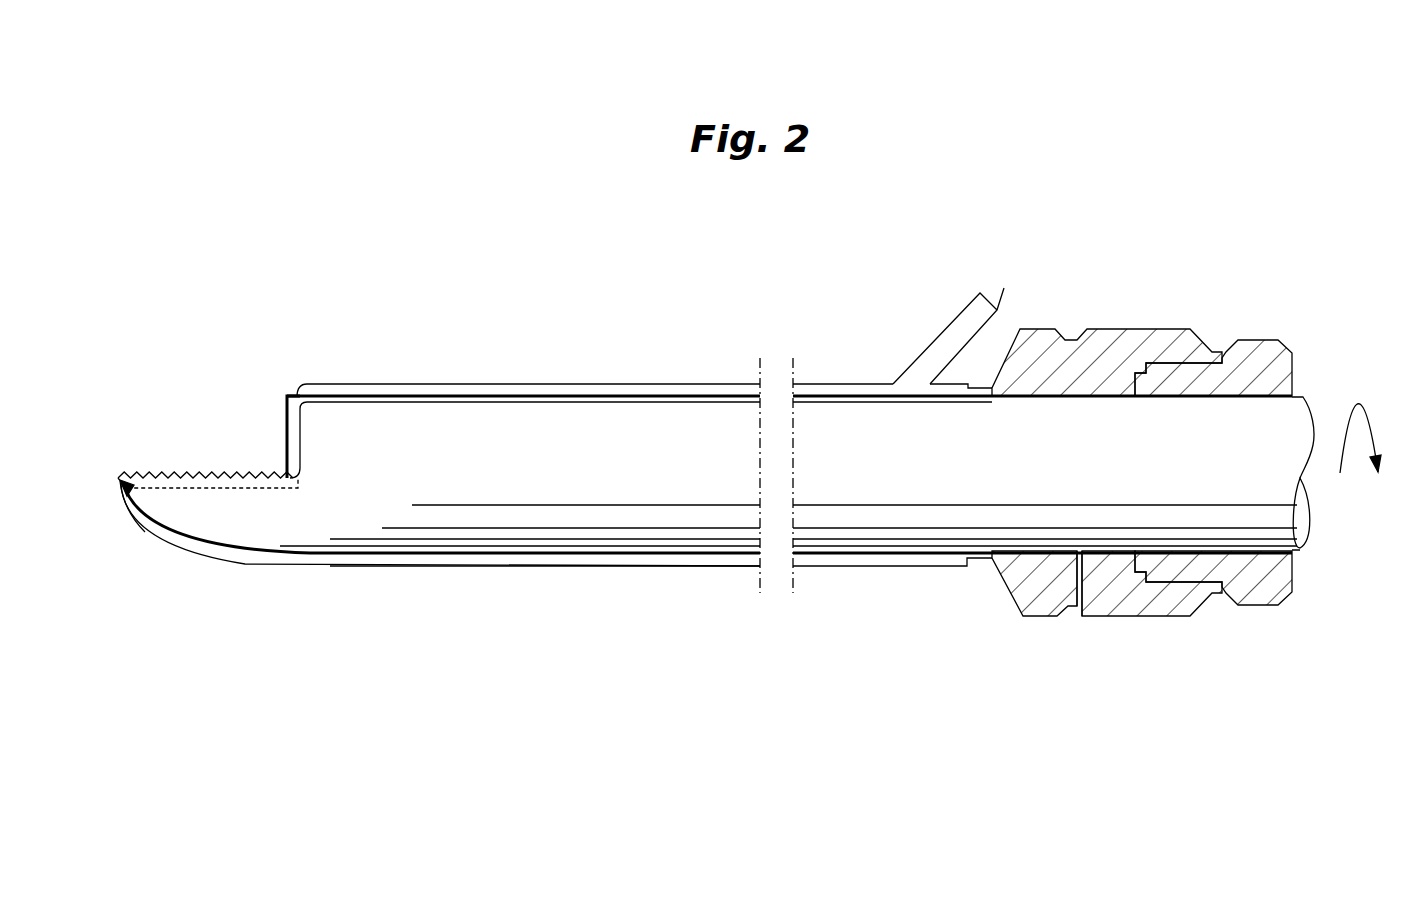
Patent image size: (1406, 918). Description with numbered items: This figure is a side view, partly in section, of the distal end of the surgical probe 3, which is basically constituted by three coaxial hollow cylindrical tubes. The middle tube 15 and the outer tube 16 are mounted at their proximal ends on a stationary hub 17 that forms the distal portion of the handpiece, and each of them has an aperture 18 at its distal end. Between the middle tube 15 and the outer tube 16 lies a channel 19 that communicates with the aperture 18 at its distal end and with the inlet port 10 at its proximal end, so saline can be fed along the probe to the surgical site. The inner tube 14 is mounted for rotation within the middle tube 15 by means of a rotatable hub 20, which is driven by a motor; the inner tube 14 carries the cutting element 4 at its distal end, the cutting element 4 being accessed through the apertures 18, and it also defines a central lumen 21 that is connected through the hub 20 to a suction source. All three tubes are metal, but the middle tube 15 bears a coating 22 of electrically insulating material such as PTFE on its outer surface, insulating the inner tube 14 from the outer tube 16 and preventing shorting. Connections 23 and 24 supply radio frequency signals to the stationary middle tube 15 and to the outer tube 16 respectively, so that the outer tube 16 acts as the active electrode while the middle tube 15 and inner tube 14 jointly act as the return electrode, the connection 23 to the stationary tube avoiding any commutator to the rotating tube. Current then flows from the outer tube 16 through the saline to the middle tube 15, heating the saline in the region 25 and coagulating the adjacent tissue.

The surgical probe 3 is at (400, 383).
The cutting element 4 is at (190, 470).
The inlet port 10 is at (950, 340).
The inner tube 14 is at (150, 518).
The middle tube 15 is at (578, 393).
The outer tube 16 is at (497, 383).
The stationary hub 17 is at (1142, 327).
The aperture 18 is at (280, 423).
The channel 19 is at (665, 388).
The rotatable hub 20 is at (1255, 355).
The central lumen 21 is at (378, 537).
The coating 22 is at (583, 558).
The connection 23 is at (1080, 612).
The connection 24 is at (858, 568).
The region 25 is at (295, 395).